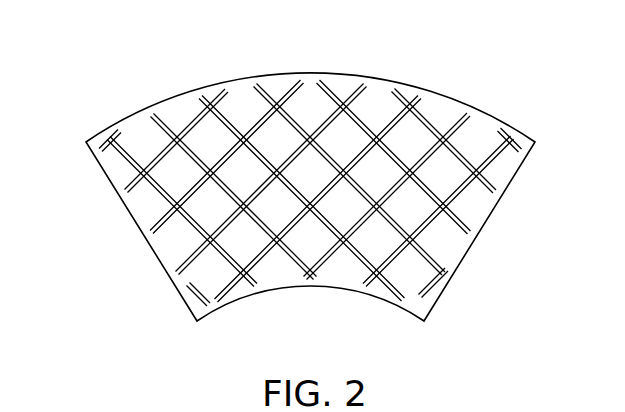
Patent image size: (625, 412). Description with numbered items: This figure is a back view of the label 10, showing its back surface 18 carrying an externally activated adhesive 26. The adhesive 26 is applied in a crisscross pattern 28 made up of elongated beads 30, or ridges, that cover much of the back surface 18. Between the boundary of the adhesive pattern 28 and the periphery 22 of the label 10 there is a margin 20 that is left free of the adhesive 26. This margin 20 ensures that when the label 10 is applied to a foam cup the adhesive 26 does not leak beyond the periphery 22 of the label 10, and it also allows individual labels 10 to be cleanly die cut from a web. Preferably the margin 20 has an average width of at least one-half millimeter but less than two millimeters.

The label 10 is at (312, 188).
The back surface 18 is at (130, 130).
The margin 20 is at (312, 188).
The periphery 22 is at (220, 80).
The externally activated adhesive 26 is at (462, 221).
The crisscross pattern 28 is at (318, 159).
The elongated beads 30 is at (318, 184).